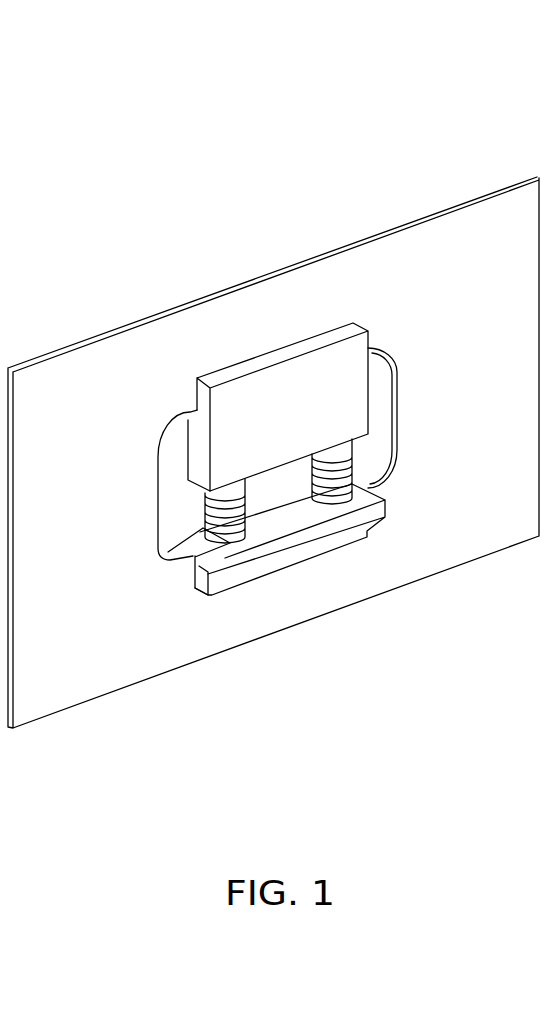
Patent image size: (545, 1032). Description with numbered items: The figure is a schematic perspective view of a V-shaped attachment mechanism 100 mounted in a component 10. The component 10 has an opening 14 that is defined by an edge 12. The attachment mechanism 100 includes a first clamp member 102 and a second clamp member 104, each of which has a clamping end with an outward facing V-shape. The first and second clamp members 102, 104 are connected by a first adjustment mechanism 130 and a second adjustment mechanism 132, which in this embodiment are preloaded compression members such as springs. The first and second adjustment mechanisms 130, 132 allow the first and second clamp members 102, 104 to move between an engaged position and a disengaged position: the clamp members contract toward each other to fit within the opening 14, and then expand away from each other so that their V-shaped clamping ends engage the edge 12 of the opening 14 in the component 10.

The component 10 is at (100, 667).
The edge 12 is at (395, 453).
The opening 14 is at (173, 481).
The attachment mechanism 100 is at (135, 228).
The first clamp member 102 is at (277, 320).
The second clamp member 104 is at (297, 590).
The first adjustment mechanism 130 is at (223, 510).
The second adjustment mechanism 132 is at (343, 502).